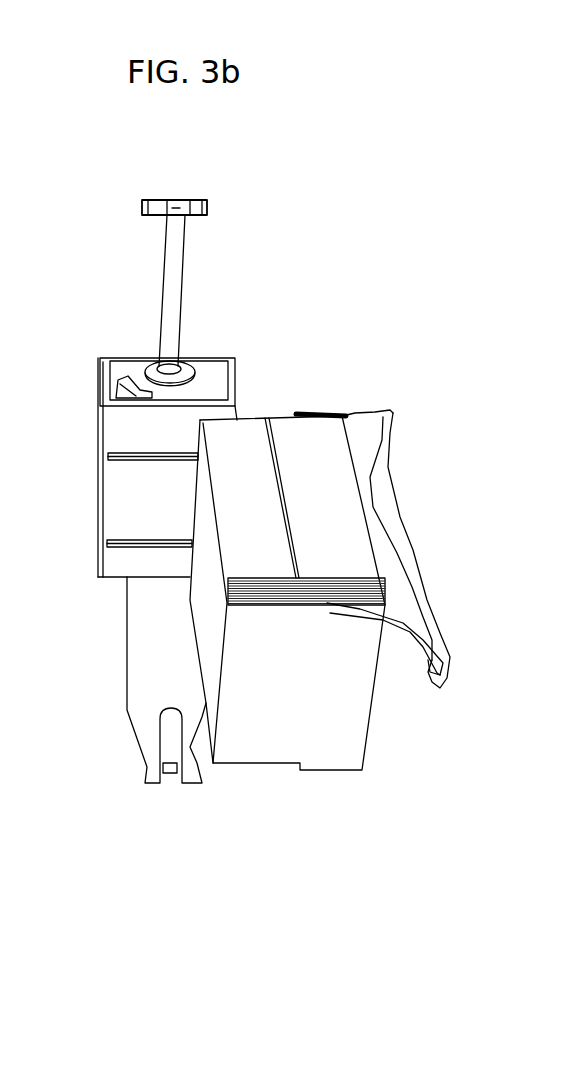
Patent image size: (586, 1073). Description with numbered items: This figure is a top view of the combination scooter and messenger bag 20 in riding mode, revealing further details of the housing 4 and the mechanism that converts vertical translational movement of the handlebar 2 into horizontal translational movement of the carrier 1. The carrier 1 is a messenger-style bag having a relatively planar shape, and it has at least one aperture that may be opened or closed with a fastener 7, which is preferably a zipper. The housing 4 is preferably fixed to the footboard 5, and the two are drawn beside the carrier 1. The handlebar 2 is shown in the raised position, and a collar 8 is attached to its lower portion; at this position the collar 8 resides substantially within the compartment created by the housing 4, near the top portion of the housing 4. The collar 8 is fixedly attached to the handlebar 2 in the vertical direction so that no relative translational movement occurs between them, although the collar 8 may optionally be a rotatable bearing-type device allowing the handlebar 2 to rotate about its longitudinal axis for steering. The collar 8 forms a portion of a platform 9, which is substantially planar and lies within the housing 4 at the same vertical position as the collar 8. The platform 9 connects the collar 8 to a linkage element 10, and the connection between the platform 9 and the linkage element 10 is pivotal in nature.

The carrier 1 is at (315, 455).
The handlebar 2 is at (180, 235).
The housing 4 is at (147, 502).
The footboard 5 is at (147, 668).
The fastener 7 is at (172, 765).
The collar 8 is at (158, 364).
The platform 9 is at (132, 361).
The linkage element 10 is at (118, 385).
The combination scooter and messenger bag 20 is at (279, 821).